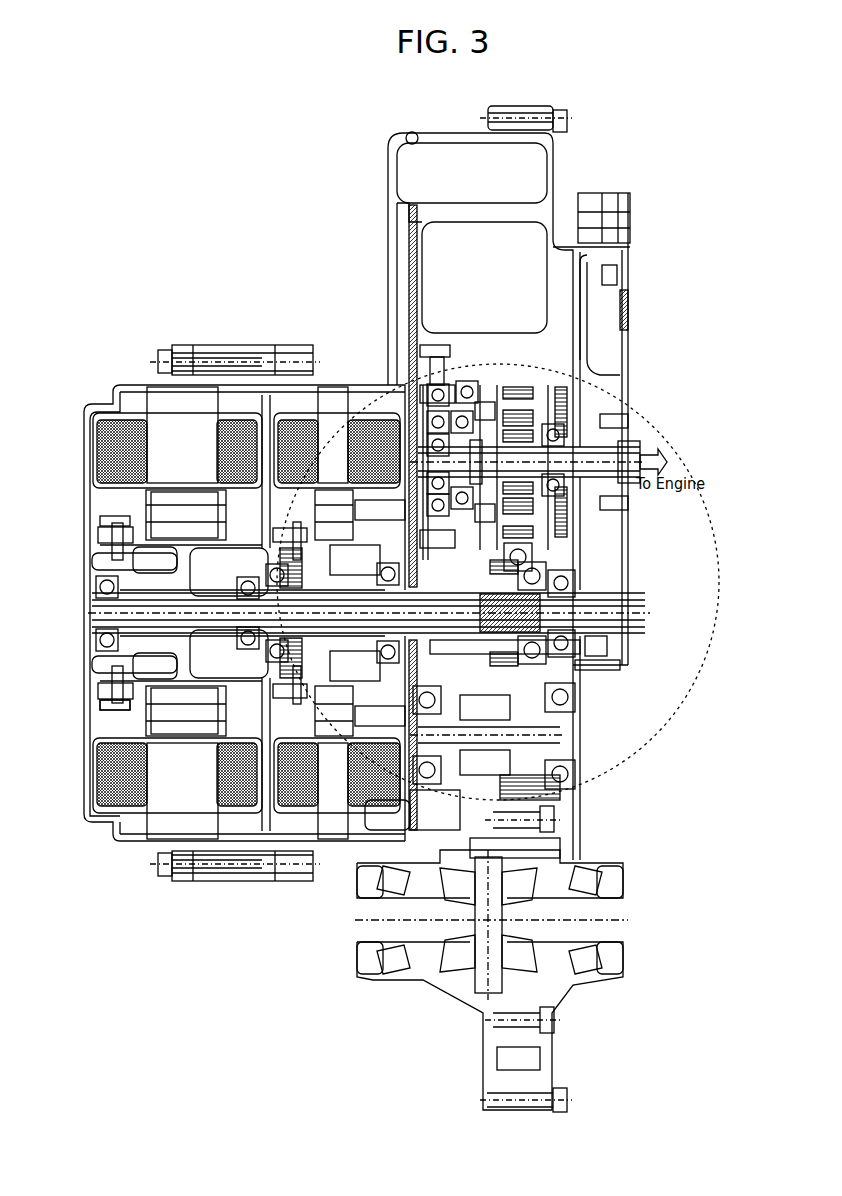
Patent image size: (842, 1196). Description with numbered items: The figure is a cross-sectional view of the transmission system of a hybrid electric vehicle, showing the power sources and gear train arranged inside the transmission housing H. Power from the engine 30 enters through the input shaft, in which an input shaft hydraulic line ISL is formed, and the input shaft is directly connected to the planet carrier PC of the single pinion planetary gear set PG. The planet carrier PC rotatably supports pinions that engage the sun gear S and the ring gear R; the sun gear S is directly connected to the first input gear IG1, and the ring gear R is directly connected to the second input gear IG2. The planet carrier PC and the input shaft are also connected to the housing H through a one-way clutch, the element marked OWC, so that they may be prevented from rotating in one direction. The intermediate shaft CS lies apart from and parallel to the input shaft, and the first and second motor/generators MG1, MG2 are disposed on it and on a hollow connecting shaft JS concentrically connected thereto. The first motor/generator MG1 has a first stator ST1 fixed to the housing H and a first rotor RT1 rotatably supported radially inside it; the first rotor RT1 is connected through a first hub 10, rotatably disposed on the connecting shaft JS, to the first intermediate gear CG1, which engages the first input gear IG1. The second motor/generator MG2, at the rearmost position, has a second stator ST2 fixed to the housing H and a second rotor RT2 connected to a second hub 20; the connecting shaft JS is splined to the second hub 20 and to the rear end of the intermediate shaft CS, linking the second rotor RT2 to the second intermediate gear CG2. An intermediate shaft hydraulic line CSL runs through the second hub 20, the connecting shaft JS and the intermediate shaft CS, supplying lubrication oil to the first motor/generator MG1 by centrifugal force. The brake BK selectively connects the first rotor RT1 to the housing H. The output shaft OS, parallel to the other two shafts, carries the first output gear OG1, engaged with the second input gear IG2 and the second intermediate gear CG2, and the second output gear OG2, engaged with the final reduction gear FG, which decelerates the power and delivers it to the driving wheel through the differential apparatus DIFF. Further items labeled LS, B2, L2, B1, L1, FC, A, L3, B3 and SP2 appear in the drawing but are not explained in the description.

The second motor/generator MG2 is at (144, 584).
The first motor/generator MG1 is at (213, 574).
The second stator ST2 is at (97, 440).
The first stator ST1 is at (280, 462).
The second rotor RT2 is at (140, 500).
The first rotor RT1 is at (300, 520).
The transmission housing H is at (332, 388).
The lock-up shaft/sleeve LS is at (346, 522).
The second brake B2 is at (282, 515).
The first input gear IG1 is at (422, 400).
The second clutch/lever L2 is at (408, 272).
The second input gear IG2 is at (445, 345).
The first brake B1 is at (462, 392).
The one-way clutch OWC is at (490, 386).
The first clutch/lever L1 is at (505, 400).
The ring gear R is at (515, 390).
The flywheel/cover FC is at (598, 334).
The planetary gear set PG is at (586, 431).
The planet carrier PC is at (625, 410).
The sun gear S is at (635, 418).
The input shaft hydraulic line ISL is at (640, 450).
The region A is at (716, 518).
The engine 30 is at (618, 545).
The third clutch/lever L3 is at (582, 564).
The third brake B3 is at (590, 600).
The intermediate shaft CS is at (608, 626).
The intermediate shaft hydraulic line CSL is at (600, 648).
The second intermediate gear CG2 is at (565, 690).
The first intermediate gear CG1 is at (520, 737).
The output shaft OS is at (562, 760).
The second output gear OG2 is at (565, 780).
The final reduction gear FG is at (565, 805).
The differential apparatus DIFF is at (630, 888).
The first output gear OG1 is at (470, 790).
The brake BK is at (115, 552).
The second support SP2 is at (130, 575).
The first hub 10 is at (125, 625).
The second hub 20 is at (120, 668).
The connecting shaft JS is at (118, 700).